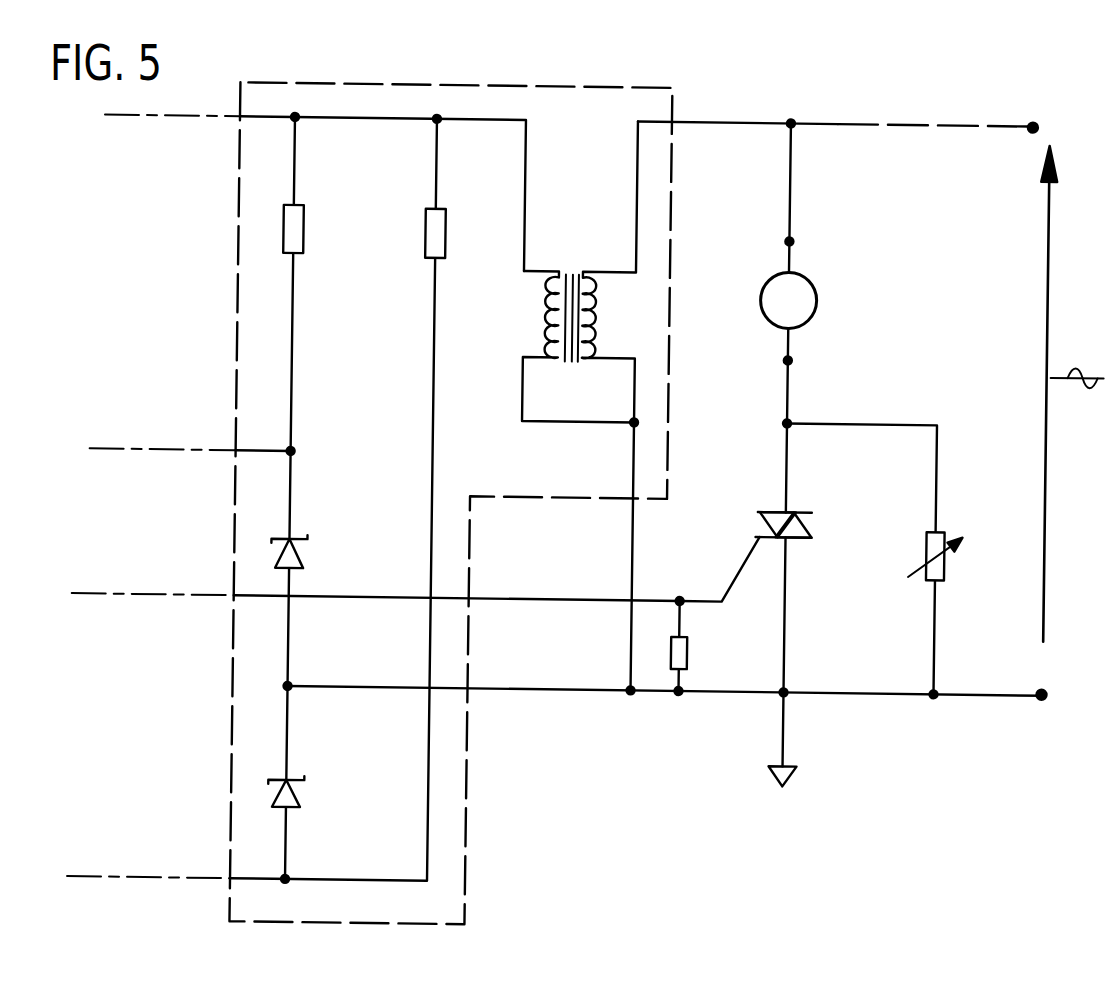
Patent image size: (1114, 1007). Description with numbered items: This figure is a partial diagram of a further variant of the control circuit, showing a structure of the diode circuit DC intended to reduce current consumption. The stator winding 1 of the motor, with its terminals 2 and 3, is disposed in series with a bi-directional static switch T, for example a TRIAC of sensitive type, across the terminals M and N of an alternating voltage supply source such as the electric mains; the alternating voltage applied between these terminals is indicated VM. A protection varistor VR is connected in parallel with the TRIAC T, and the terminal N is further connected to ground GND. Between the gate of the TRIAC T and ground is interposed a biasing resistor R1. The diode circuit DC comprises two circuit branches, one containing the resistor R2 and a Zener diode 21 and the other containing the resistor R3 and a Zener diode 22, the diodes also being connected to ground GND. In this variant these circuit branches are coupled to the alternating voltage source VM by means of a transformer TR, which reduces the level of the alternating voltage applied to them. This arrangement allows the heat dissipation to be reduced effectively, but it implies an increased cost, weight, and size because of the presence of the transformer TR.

The stator winding 1 is at (808, 299).
The winding terminal 2 is at (788, 239).
The winding terminal 3 is at (786, 358).
The zener diode 21 is at (304, 558).
The zener diode 22 is at (301, 799).
The biasing resistor R1 is at (690, 649).
The resistor R2 is at (300, 230).
The resistor R3 is at (422, 242).
The protection varistor VR is at (945, 565).
The bi-directional static switch T is at (796, 510).
The transformer TR is at (566, 268).
The diode circuit DC is at (447, 88).
The ground GND is at (793, 768).
The supply terminal M is at (1032, 122).
The supply terminal N is at (1046, 692).
The alternating voltage VM is at (1043, 398).